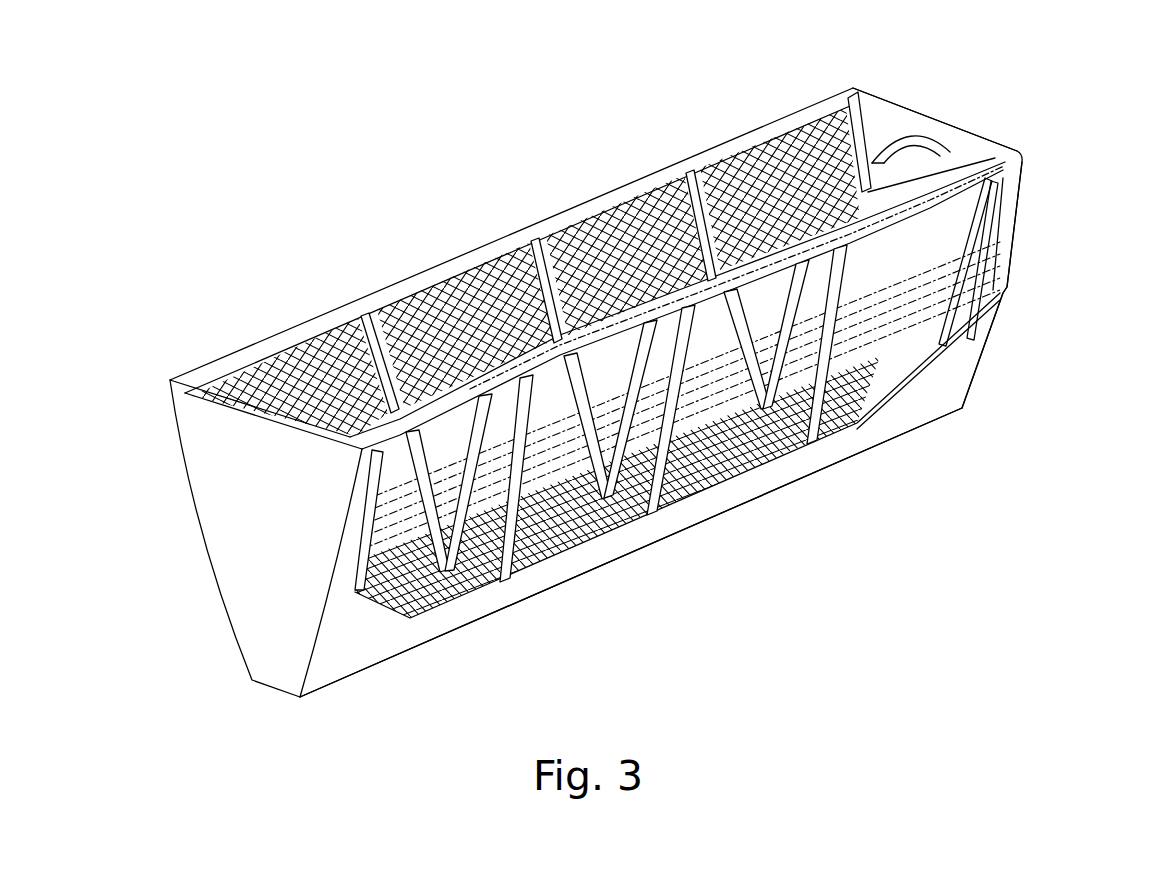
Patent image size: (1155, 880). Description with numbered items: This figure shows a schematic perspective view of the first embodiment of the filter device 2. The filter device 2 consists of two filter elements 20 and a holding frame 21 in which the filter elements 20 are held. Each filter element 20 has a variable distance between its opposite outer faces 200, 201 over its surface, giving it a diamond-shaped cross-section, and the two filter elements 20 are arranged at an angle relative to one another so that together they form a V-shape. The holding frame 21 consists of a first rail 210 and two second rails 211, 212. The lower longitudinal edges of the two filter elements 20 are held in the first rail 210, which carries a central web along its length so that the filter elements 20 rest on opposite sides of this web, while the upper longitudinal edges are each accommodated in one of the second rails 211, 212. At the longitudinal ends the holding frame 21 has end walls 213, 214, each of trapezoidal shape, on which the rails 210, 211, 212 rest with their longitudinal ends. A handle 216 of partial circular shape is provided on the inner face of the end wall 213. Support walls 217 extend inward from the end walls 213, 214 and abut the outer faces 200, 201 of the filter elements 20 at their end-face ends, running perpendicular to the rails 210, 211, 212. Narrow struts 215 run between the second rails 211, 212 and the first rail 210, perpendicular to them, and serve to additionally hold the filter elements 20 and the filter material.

The filter device 2 is at (228, 338).
The filter element 20 is at (430, 297).
The outer face 201 is at (592, 228).
The second rail 211 is at (717, 160).
The support wall 217 is at (840, 92).
The end wall 213 is at (890, 118).
The handle 216 is at (925, 150).
The second rail 212 is at (982, 160).
The end wall 214 is at (215, 483).
The strut 215 is at (853, 424).
The outer face 200 is at (758, 512).
The holding frame 21 is at (652, 556).
The first rail 210 is at (547, 580).